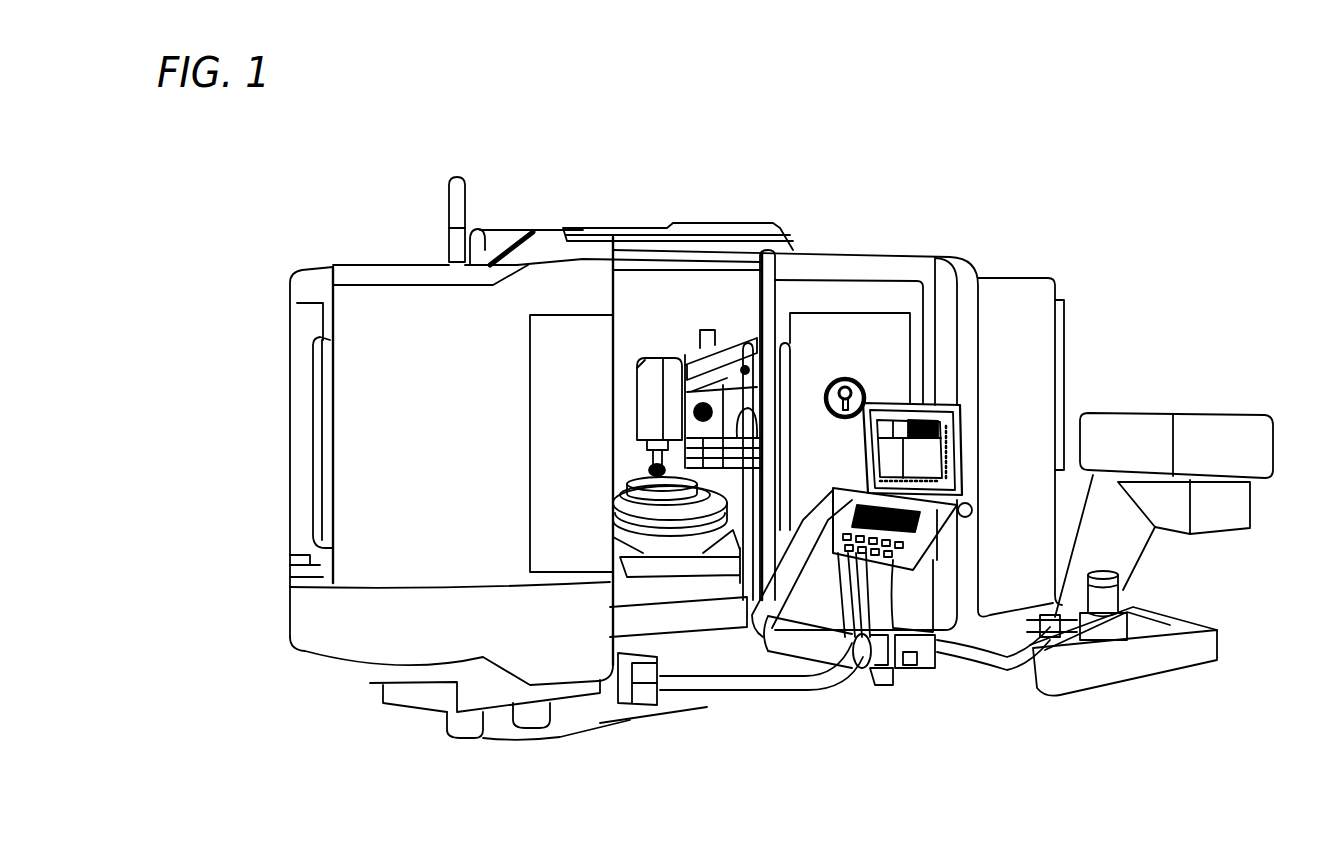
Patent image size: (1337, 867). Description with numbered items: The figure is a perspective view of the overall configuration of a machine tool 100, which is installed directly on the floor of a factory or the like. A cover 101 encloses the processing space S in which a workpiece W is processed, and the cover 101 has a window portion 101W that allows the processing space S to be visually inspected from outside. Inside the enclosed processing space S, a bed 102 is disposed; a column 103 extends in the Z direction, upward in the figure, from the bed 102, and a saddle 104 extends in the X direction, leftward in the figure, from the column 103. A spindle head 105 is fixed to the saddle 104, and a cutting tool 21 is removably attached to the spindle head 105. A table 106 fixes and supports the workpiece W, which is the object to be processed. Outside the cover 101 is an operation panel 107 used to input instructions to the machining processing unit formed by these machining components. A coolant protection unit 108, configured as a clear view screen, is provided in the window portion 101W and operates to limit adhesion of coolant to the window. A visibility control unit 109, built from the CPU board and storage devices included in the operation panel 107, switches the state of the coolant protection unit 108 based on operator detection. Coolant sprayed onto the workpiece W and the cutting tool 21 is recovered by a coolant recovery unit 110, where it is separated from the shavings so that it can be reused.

The machine tool 100 is at (1114, 163).
The cover 101 is at (882, 307).
The window portion 101W is at (892, 342).
The bed 102 is at (667, 593).
The column 103 is at (750, 328).
The saddle 104 is at (718, 345).
The spindle head 105 is at (645, 357).
The table 106 is at (697, 560).
The operation panel 107 is at (892, 567).
The coolant protection unit 108 is at (843, 378).
The visibility control unit 109 is at (915, 569).
The coolant recovery unit 110 is at (1120, 661).
The cutting tool 21 is at (648, 470).
The workpiece W is at (635, 490).
The processing space S is at (662, 297).